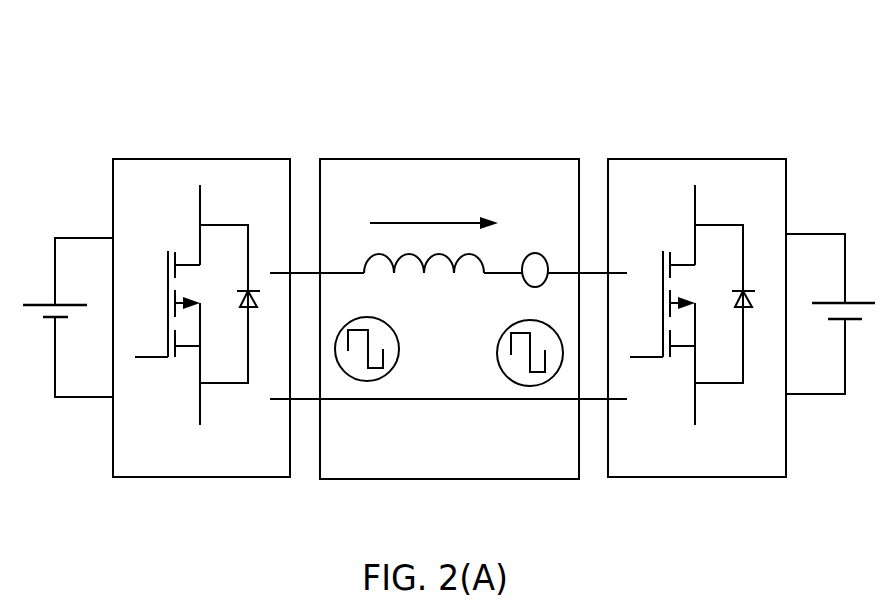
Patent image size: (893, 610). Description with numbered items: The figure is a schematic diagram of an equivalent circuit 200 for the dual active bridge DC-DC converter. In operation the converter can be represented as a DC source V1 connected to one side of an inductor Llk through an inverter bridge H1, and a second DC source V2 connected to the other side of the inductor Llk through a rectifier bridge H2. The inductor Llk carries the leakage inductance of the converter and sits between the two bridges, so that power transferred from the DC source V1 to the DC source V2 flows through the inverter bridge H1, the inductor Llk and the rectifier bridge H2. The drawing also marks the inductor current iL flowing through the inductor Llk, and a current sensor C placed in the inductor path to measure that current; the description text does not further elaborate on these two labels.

The equivalent circuit 200 is at (360, 68).
The inverter bridge H1 is at (201, 342).
The rectifier bridge H2 is at (697, 342).
The DC source V1 is at (62, 317).
The DC source V2 is at (834, 314).
The inductor Llk is at (424, 285).
The inductor current iL is at (434, 208).
The current sensor C is at (534, 253).